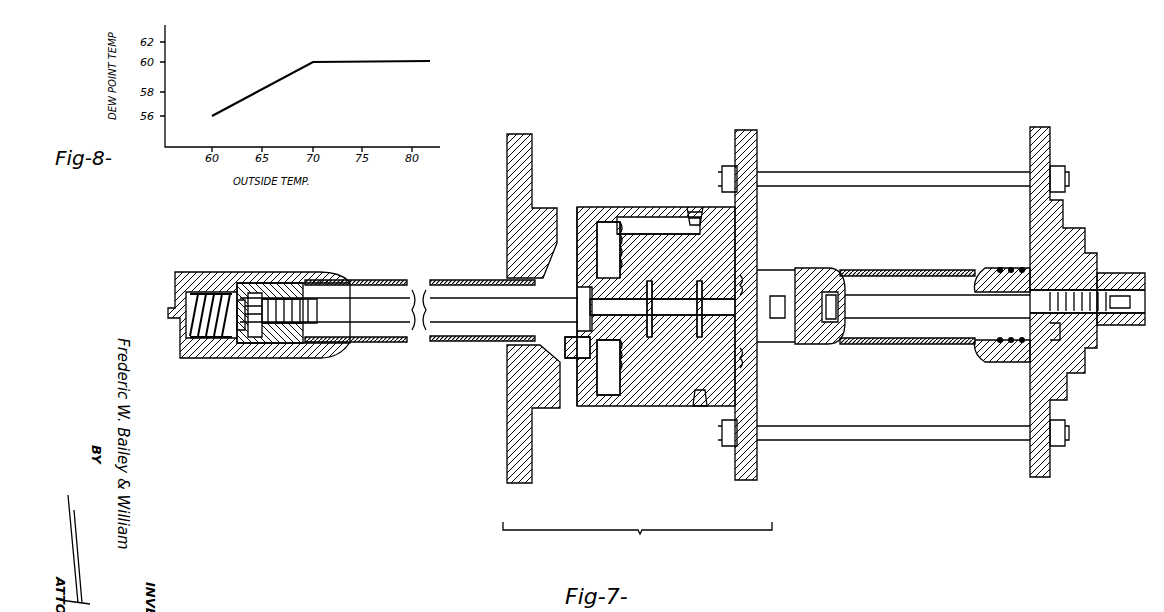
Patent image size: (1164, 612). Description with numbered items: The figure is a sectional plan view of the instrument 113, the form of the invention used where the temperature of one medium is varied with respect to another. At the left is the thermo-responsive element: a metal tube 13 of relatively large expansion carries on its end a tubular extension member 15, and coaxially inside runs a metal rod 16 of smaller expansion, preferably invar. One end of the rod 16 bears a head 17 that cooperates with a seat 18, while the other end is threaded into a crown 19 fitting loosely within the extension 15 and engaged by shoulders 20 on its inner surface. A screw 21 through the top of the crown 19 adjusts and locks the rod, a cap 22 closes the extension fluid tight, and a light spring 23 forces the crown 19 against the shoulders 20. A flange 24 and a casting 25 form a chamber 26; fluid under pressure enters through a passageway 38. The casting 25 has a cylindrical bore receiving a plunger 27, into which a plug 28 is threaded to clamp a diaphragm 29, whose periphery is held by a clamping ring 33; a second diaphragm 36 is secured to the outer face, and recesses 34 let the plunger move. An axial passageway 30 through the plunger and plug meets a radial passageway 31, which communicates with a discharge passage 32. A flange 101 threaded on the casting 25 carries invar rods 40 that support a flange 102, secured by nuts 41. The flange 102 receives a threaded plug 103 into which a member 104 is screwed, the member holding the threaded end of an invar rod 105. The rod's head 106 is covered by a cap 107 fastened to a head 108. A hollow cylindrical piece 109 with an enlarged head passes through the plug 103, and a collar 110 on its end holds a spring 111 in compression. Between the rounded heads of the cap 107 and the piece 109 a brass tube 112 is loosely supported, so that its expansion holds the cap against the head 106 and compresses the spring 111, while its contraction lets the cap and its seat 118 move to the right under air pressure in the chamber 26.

The metal tube 13 is at (430, 340).
The tubular extension member 15 is at (275, 272).
The metal rod 16 is at (412, 295).
The head 17 is at (577, 347).
The seat 18 is at (582, 297).
The crown 19 is at (272, 345).
The shoulders 20 is at (350, 282).
The screw 21 is at (242, 300).
The cap 22 is at (178, 280).
The light spring 23 is at (190, 356).
The flange 24 is at (507, 445).
The second casting 25 is at (680, 210).
The chamber 26 is at (575, 240).
The plunger 27 is at (745, 228).
The plug 28 is at (609, 355).
The diaphragm 29 is at (608, 398).
The axial passageway 30 is at (652, 408).
The radial passageway 31 is at (668, 408).
The discharge passage 32 is at (700, 406).
The clamping ring 33 is at (607, 225).
The recess 34 is at (630, 400).
The diaphragm 36 is at (757, 258).
The passageway 38 is at (695, 207).
The invar rods 40 is at (878, 440).
The nut 41 is at (726, 166).
The flange 101 is at (746, 480).
The flange 102 is at (1067, 212).
The threaded plug 103 is at (1035, 342).
The externally threaded member 104 is at (1110, 273).
The invar rod 105 is at (920, 270).
The head 106 is at (835, 344).
The cap 107 is at (830, 268).
The head 108 is at (780, 268).
The hollow cylindrical piece 109 is at (985, 268).
The collar 110 is at (1045, 255).
The spring 111 is at (1011, 266).
The tube 112 is at (918, 344).
The instrument 113 is at (637, 541).
The seat 118 is at (1122, 310).